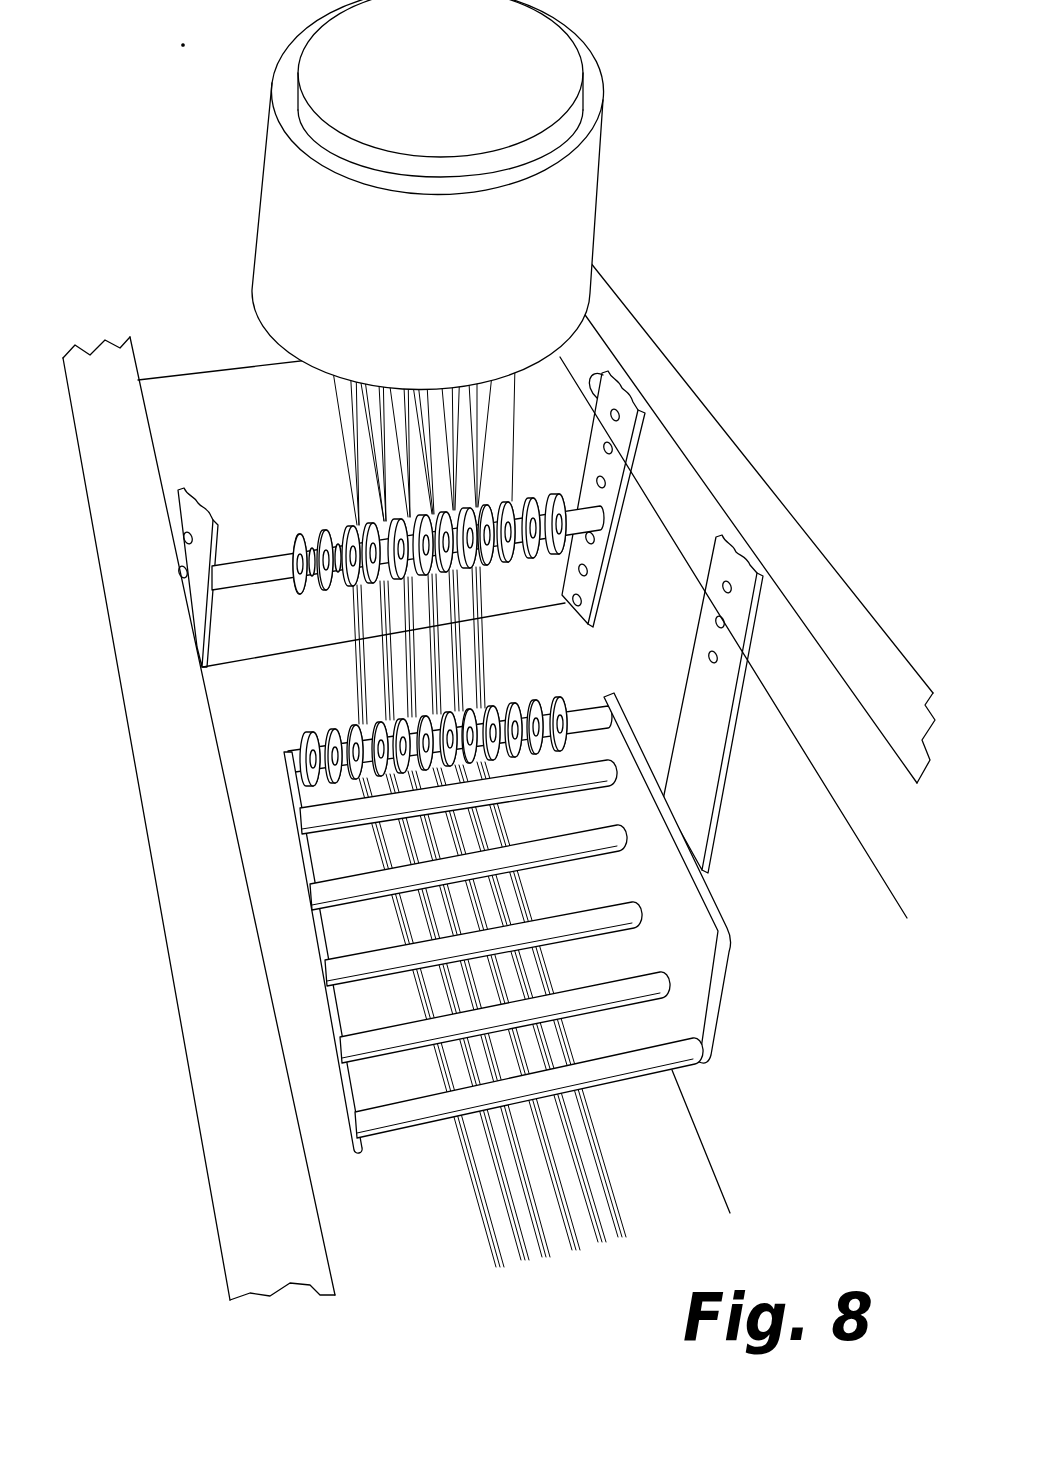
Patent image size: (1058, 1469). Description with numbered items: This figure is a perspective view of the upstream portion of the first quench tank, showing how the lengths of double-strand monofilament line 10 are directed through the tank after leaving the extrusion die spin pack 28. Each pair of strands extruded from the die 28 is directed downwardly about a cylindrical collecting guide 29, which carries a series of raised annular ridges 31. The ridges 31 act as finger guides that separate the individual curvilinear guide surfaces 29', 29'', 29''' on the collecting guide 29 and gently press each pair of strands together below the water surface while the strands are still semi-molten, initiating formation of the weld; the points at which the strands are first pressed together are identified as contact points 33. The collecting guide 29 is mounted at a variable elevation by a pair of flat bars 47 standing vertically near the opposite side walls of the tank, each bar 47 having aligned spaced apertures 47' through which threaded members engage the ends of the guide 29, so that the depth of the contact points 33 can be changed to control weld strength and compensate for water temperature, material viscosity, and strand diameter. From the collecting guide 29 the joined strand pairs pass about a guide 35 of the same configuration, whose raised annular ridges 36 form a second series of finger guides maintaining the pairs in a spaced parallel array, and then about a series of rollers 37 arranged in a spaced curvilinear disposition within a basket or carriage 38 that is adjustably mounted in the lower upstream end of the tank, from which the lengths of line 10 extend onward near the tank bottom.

The double-strand monofilament line 10 is at (505, 1157).
The extrusion die spin pack 28 is at (543, 225).
The cylindrical collecting guide 29 is at (408, 524).
The curvilinear guide surface 29' is at (264, 594).
The curvilinear guide surface 29'' is at (335, 613).
The curvilinear guide surface 29''' is at (300, 590).
The raised annular ridges 31 is at (353, 543).
The contact points 33 is at (403, 517).
The guide 35 is at (602, 720).
The raised annular ridges 36 is at (555, 694).
The rollers 37 is at (605, 782).
The basket or carriage 38 is at (730, 968).
The flat bars 47 is at (423, 493).
The aligned spaced apertures 47' is at (449, 650).